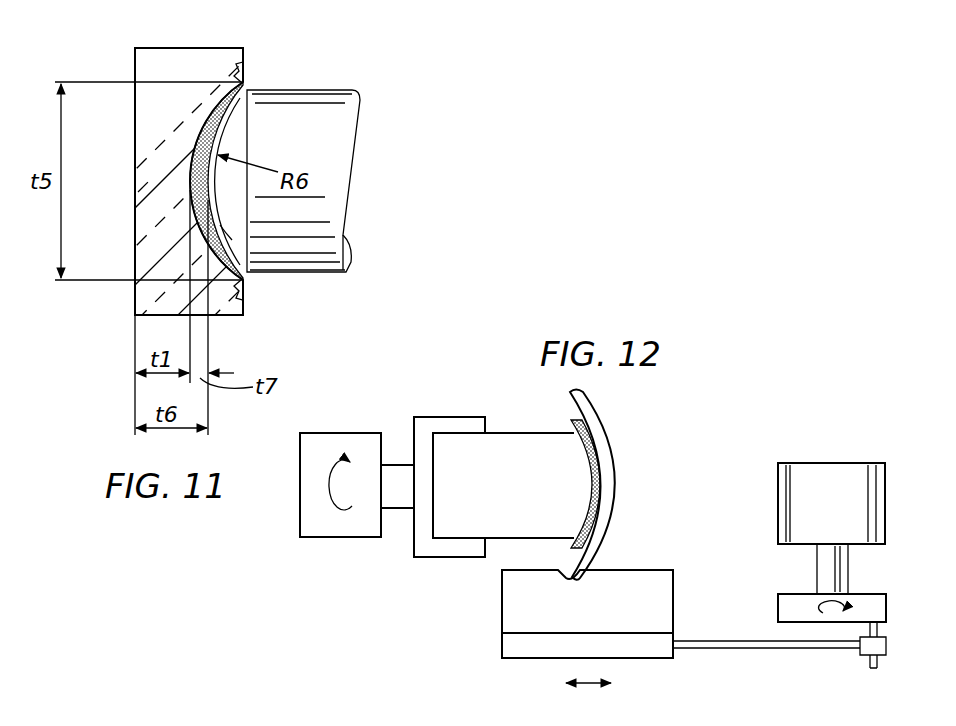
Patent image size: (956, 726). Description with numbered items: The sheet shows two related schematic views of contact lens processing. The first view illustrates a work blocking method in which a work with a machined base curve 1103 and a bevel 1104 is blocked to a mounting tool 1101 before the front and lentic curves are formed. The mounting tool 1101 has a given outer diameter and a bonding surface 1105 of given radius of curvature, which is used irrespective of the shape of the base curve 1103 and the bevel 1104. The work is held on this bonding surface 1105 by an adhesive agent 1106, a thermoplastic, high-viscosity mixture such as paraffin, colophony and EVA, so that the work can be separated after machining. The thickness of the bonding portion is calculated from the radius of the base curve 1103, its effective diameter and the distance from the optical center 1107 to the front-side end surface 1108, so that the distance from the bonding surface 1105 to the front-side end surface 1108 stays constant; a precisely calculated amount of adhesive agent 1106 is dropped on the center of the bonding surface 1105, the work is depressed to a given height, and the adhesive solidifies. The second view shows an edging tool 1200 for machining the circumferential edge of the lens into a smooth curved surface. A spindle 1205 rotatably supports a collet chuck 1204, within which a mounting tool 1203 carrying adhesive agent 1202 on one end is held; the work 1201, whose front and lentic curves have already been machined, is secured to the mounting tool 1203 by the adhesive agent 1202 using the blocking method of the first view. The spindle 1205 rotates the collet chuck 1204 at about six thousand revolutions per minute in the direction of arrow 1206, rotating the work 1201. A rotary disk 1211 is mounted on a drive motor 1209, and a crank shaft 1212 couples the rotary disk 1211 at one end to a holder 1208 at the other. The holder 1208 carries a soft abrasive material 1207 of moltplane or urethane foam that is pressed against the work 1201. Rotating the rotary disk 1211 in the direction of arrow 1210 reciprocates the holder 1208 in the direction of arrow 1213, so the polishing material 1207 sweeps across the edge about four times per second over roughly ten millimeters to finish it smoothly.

In FIG. 11, the mounting tool 1101 is at (340, 272).
In FIG. 11, the base curve 1103 is at (224, 113).
In FIG. 11, the bevel 1104 is at (242, 78).
In FIG. 11, the bonding surface 1105 is at (228, 246).
In FIG. 11, the adhesive agent 1106 is at (248, 282).
In FIG. 11, the optical center 1107 is at (140, 185).
In FIG. 11, the front-side end surface 1108 is at (135, 63).
In FIG. 12, the edging tool 1200 is at (400, 605).
In FIG. 12, the work 1201 is at (600, 425).
In FIG. 12, the adhesive agent 1202 is at (597, 490).
In FIG. 12, the mounting tool 1203 is at (530, 447).
In FIG. 12, the collet chuck 1204 is at (450, 428).
In FIG. 12, the spindle 1205 is at (347, 427).
In FIG. 12, the arrow 1206 is at (330, 507).
In FIG. 12, the soft abrasive material 1207 is at (520, 607).
In FIG. 12, the holder 1208 is at (515, 644).
In FIG. 12, the drive motor 1209 is at (820, 480).
In FIG. 12, the arrow 1210 is at (822, 610).
In FIG. 12, the rotary disk 1211 is at (785, 608).
In FIG. 12, the crank shaft 1212 is at (808, 652).
In FIG. 12, the arrow 1213 is at (600, 683).